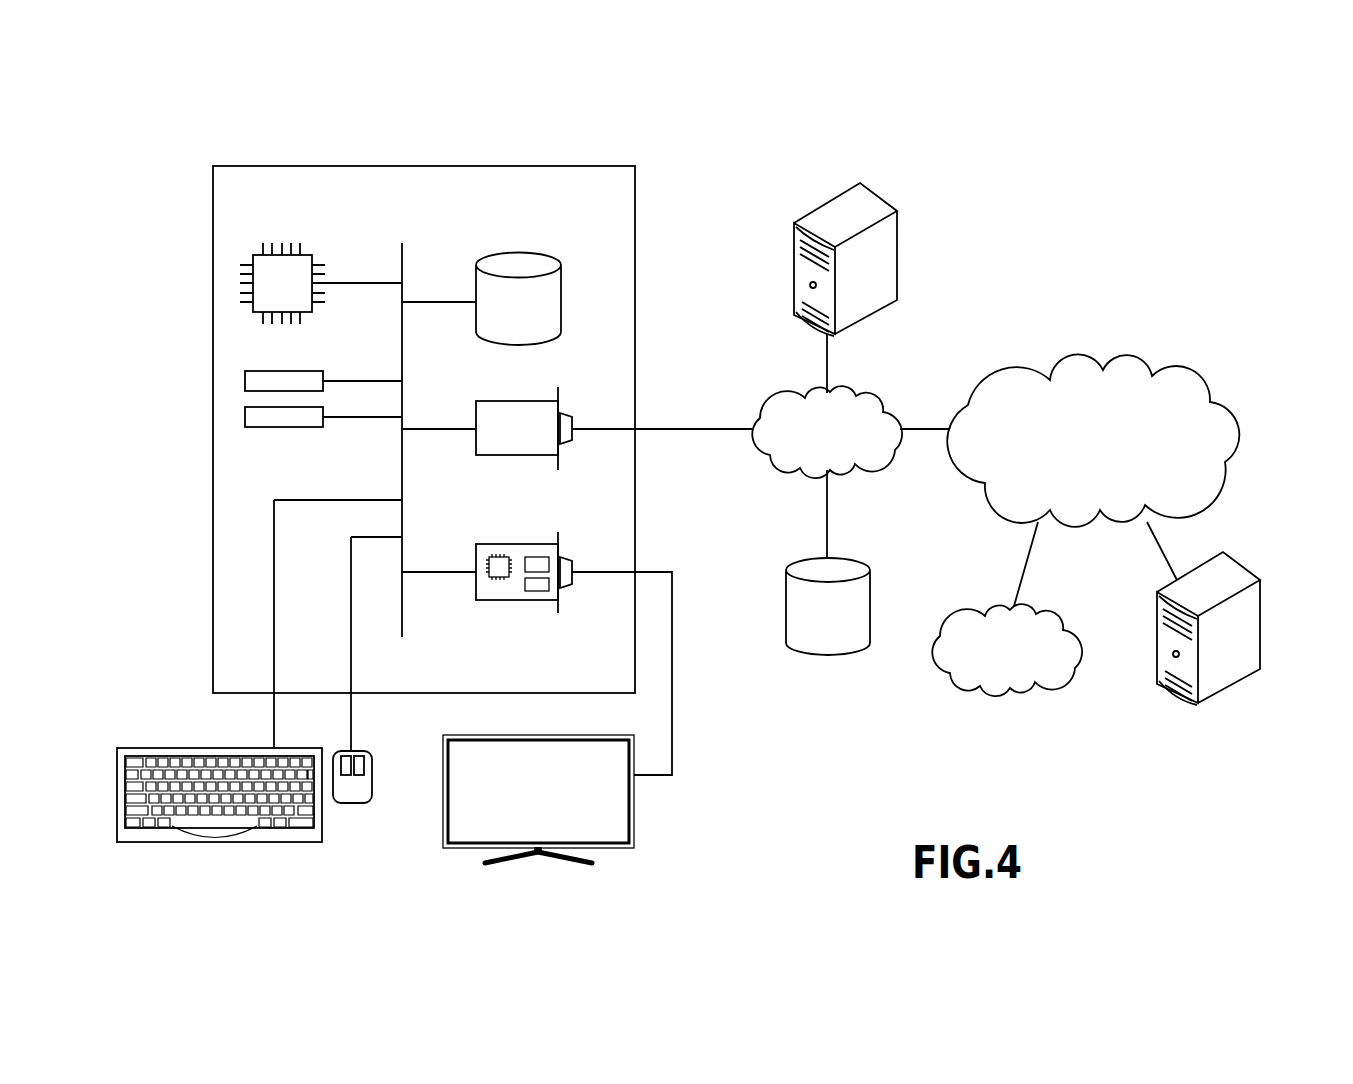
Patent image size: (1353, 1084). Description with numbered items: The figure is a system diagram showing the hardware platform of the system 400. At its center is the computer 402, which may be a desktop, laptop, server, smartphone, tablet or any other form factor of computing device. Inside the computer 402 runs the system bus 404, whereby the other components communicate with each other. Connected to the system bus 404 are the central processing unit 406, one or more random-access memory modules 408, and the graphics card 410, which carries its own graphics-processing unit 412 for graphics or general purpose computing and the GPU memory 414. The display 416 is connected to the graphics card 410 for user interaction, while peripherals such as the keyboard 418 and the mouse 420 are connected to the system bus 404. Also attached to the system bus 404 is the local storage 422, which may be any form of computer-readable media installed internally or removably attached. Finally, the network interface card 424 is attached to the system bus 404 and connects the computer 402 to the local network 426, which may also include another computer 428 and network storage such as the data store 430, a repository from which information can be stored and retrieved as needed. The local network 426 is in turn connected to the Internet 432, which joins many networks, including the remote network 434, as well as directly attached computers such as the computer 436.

The system 400 is at (284, 124).
The computer 402 is at (589, 166).
The system bus 404 is at (403, 252).
The central processing unit 406 is at (307, 253).
The random-access memory modules 408 is at (323, 413).
The graphics card 410 is at (476, 557).
The graphics-processing unit 412 is at (497, 579).
The GPU memory 414 is at (535, 596).
The display 416 is at (634, 828).
The keyboard 418 is at (222, 843).
The mouse 420 is at (351, 805).
The local storage 422 is at (563, 284).
The network interface card 424 is at (476, 410).
The local network 426 is at (881, 388).
The computer 428 is at (879, 195).
The data store 430 is at (858, 565).
The Internet 432 is at (1140, 352).
The remote network 434 is at (1062, 606).
The computer 436 is at (1237, 561).